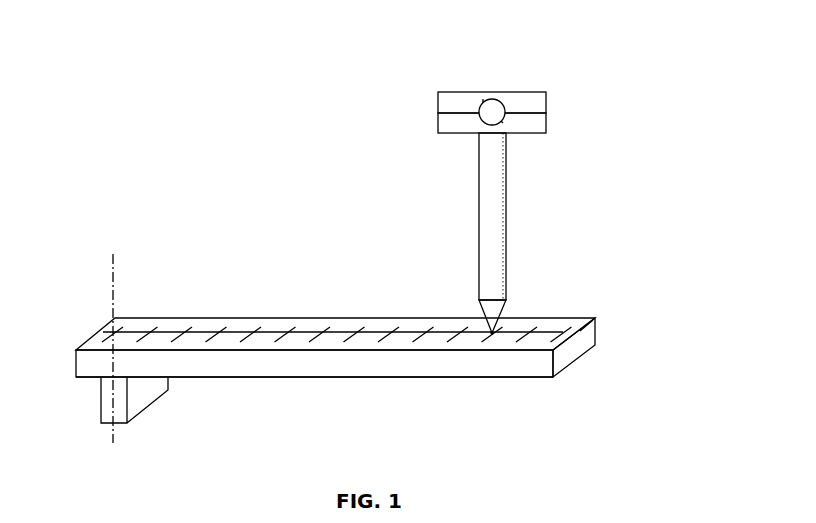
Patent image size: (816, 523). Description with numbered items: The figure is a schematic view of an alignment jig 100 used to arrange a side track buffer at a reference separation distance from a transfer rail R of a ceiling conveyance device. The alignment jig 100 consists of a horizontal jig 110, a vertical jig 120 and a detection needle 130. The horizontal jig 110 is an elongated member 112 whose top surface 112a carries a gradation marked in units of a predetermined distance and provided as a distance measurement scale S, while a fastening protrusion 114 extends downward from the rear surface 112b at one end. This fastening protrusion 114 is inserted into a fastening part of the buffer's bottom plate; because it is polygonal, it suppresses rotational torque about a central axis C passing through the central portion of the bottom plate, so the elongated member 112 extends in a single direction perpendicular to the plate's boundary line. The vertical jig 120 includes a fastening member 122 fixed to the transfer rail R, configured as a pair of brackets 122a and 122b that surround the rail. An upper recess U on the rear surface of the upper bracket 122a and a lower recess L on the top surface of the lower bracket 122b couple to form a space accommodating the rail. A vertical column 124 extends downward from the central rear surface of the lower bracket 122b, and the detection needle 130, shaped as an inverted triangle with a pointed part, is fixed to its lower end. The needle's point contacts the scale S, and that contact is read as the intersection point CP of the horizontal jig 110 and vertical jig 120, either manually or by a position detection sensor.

The alignment jig 100 is at (358, 36).
The horizontal jig 110 is at (374, 350).
The elongated member 112 is at (335, 348).
The top surface 112a is at (335, 310).
The rear surface 112b is at (372, 378).
The fastening protrusion 114 is at (143, 402).
The vertical jig 120 is at (485, 190).
The fastening member 122 is at (441, 113).
The upper bracket 122a is at (438, 107).
The lower bracket 122b is at (438, 125).
The vertical column 124 is at (506, 243).
The detection needle 130 is at (495, 313).
The central axis C is at (113, 292).
The scale S is at (323, 330).
The intersection point CP is at (493, 334).
The upper recess U is at (483, 100).
The transfer rail R is at (492, 107).
The lower recess L is at (502, 121).